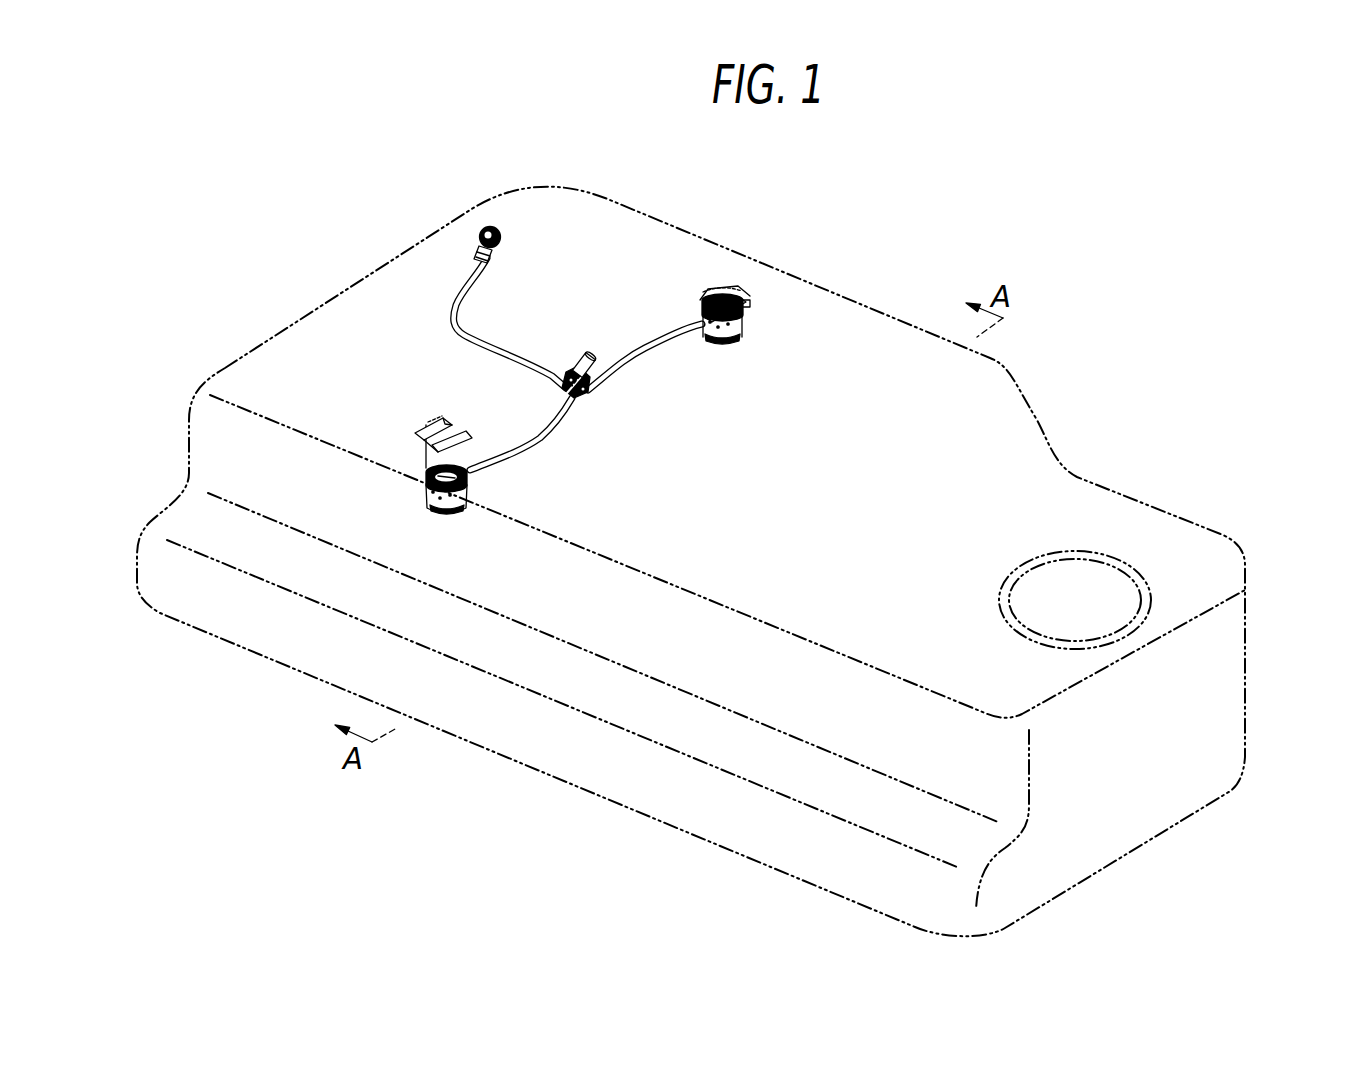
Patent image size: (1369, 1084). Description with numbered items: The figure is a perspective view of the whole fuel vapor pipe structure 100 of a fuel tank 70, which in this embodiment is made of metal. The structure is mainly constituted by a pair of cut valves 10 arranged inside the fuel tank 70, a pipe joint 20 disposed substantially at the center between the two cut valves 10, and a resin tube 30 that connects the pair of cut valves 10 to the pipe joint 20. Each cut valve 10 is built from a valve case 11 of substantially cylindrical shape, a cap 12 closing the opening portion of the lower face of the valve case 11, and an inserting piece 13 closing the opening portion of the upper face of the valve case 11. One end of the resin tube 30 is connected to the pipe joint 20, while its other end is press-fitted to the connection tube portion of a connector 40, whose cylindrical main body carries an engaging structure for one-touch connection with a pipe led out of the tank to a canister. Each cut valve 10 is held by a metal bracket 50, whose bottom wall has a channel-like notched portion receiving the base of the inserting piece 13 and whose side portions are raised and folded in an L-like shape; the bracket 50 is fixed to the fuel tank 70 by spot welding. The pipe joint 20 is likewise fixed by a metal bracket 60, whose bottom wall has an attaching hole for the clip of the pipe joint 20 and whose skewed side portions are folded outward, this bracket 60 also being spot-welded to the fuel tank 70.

The fuel vapor pipe structure 100 is at (596, 226).
The cut valve 10 is at (585, 432).
The valve case 11 is at (432, 505).
The cap 12 is at (447, 513).
The inserting piece 13 is at (425, 467).
The pipe joint 20 is at (546, 393).
The resin tube 30 is at (463, 313).
The connector 40 is at (512, 254).
The metal bracket 50 is at (418, 406).
The metal bracket 60 is at (601, 346).
The fuel tank 70 is at (866, 327).